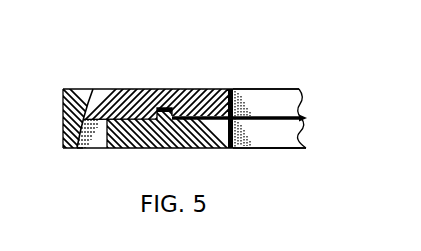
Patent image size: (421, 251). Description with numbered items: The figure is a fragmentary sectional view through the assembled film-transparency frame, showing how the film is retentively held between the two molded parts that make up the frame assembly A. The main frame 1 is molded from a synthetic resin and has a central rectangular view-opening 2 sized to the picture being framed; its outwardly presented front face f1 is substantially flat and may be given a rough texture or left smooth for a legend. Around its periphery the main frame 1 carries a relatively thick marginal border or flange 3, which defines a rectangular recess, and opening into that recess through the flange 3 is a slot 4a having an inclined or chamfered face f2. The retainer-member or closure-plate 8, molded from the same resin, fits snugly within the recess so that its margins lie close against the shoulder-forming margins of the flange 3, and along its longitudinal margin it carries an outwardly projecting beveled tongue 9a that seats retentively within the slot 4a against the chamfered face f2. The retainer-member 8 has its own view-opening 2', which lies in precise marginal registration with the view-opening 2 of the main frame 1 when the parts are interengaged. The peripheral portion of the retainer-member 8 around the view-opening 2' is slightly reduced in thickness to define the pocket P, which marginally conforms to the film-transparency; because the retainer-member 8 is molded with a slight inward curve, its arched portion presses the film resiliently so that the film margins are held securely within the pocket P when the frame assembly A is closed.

The frame assembly A is at (176, 83).
The marginal border or flange 3 is at (63, 89).
The beveled tongue 9a is at (93, 89).
The slot 4a is at (98, 128).
The view-opening 2 is at (140, 143).
The view-opening 2' is at (253, 97).
The retainer-member or closure-plate 8 is at (301, 86).
The pocket P is at (307, 118).
The main frame 1 is at (307, 148).
The front face f1 is at (284, 181).
The inclined or chamfered face f2 is at (79, 147).